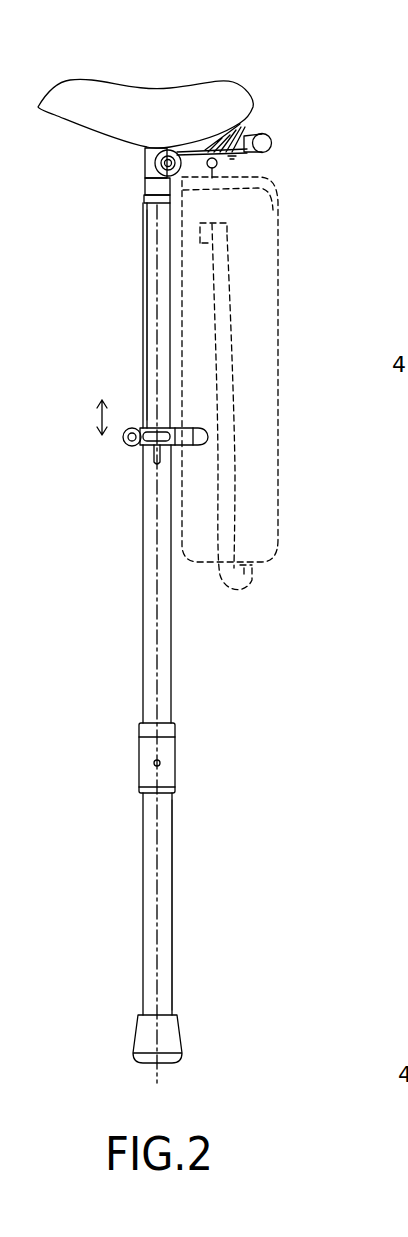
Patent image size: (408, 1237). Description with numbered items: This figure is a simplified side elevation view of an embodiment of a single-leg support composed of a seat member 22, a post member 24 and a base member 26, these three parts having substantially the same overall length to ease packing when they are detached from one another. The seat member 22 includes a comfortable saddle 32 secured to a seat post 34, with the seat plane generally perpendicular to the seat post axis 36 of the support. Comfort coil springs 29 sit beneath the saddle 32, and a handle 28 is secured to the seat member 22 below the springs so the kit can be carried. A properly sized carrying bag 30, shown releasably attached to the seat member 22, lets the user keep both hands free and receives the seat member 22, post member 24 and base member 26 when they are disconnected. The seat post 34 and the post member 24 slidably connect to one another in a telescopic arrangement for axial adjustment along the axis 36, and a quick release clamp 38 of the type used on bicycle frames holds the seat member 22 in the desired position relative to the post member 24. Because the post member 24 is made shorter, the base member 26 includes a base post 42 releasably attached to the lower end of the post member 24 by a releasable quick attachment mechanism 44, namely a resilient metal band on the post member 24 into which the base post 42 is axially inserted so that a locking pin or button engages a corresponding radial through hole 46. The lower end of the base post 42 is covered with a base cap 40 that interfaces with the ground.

The seat member 22 is at (130, 221).
The post member 24 is at (191, 627).
The base member 26 is at (182, 905).
The handle 28 is at (270, 147).
The comfort coil springs 29 is at (233, 128).
The carrying bag 30 is at (277, 202).
The saddle 32 is at (232, 82).
The seat post 34 is at (143, 245).
The axis 36 is at (155, 307).
The quick release clamp 38 is at (200, 428).
The base cap 40 is at (140, 1040).
The base post 42 is at (173, 867).
The releasable quick attachment mechanism 44 is at (140, 762).
The radial through hole 46 is at (160, 763).